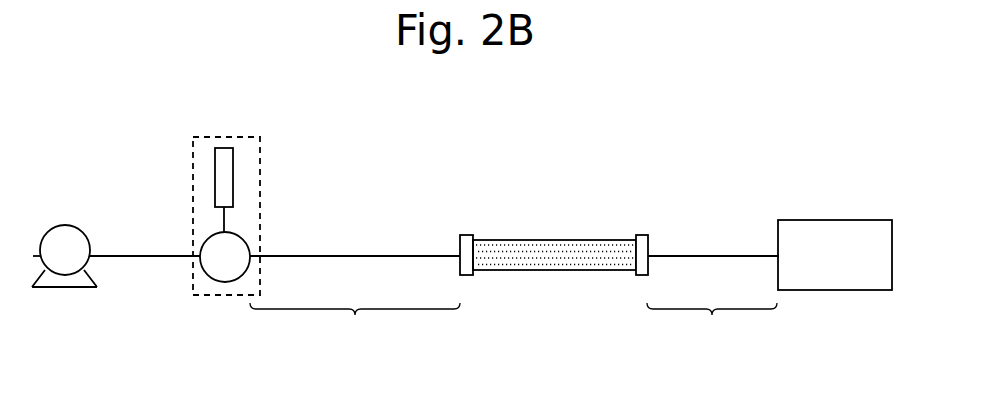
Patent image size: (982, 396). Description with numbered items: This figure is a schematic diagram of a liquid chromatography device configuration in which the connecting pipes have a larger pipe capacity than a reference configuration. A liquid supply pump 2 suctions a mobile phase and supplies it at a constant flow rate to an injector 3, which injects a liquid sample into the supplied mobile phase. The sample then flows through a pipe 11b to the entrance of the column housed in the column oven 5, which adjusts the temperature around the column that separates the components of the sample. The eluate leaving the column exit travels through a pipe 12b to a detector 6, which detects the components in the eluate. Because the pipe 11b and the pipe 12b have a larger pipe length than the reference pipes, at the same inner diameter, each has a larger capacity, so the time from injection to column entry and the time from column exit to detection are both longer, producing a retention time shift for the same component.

The liquid supply pump 2 is at (56, 225).
The injector 3 is at (193, 183).
The column oven 5 is at (530, 238).
The detector 6 is at (822, 220).
The pipe 11b is at (355, 302).
The pipe 12b is at (713, 302).